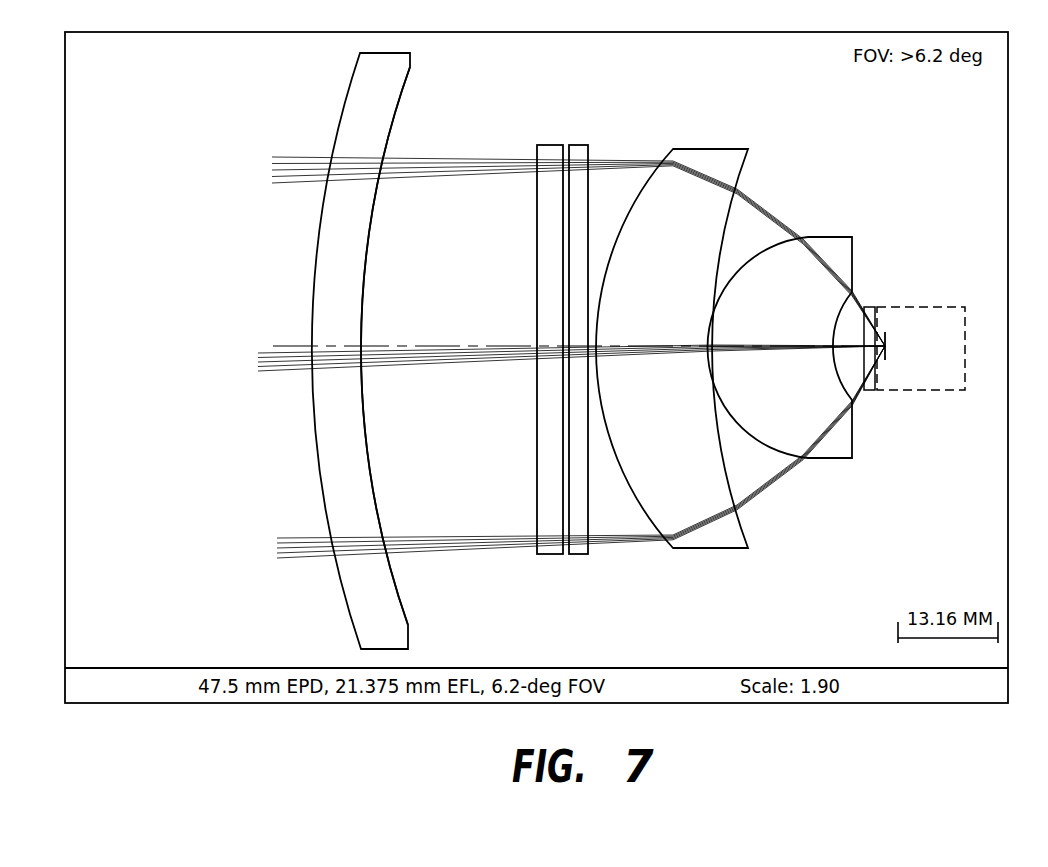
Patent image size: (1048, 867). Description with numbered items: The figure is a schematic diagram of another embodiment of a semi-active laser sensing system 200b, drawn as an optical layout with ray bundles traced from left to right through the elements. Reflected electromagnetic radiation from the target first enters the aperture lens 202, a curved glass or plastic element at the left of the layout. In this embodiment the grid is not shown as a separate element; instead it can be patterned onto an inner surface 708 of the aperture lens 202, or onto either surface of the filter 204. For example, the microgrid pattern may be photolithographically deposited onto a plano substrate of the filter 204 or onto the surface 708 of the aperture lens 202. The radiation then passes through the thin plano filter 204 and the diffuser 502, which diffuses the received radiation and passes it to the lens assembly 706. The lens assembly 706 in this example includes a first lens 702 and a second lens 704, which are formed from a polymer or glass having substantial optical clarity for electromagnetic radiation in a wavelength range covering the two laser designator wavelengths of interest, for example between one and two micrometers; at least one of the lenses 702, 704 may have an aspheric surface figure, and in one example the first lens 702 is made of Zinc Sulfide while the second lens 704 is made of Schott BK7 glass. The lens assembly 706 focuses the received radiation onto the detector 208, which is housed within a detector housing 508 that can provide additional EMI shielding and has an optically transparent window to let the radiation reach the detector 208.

The SAL sensing system 200b is at (297, 87).
The aperture lens 202 is at (315, 294).
The inner surface of the aperture lens 708 is at (367, 263).
The filter 204 is at (548, 145).
The diffuser 502 is at (580, 555).
The lens assembly 706 is at (762, 328).
The first lens 702 is at (713, 548).
The second lens 704 is at (840, 460).
The detector 208 is at (886, 336).
The detector housing 508 is at (935, 307).